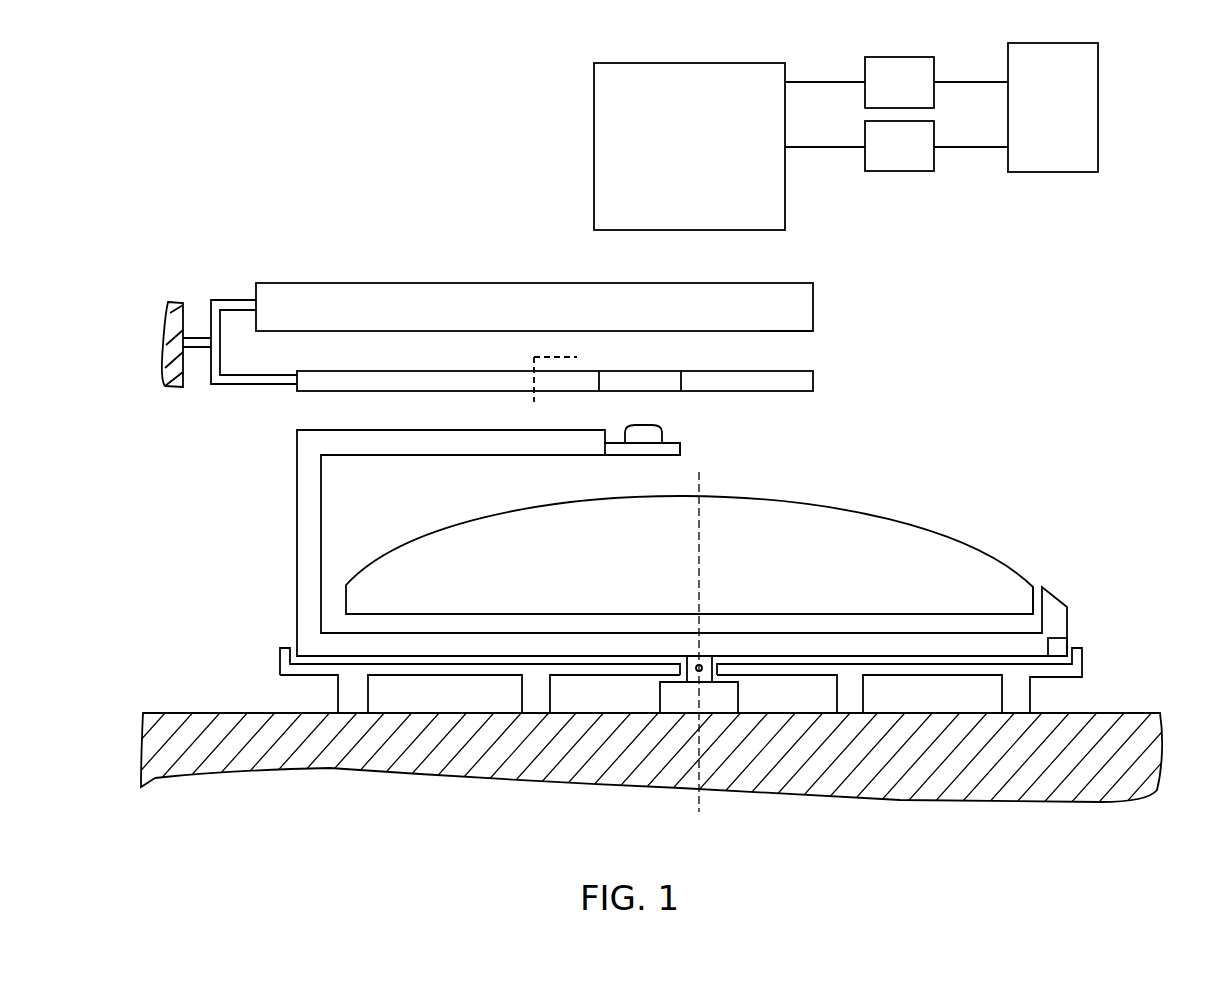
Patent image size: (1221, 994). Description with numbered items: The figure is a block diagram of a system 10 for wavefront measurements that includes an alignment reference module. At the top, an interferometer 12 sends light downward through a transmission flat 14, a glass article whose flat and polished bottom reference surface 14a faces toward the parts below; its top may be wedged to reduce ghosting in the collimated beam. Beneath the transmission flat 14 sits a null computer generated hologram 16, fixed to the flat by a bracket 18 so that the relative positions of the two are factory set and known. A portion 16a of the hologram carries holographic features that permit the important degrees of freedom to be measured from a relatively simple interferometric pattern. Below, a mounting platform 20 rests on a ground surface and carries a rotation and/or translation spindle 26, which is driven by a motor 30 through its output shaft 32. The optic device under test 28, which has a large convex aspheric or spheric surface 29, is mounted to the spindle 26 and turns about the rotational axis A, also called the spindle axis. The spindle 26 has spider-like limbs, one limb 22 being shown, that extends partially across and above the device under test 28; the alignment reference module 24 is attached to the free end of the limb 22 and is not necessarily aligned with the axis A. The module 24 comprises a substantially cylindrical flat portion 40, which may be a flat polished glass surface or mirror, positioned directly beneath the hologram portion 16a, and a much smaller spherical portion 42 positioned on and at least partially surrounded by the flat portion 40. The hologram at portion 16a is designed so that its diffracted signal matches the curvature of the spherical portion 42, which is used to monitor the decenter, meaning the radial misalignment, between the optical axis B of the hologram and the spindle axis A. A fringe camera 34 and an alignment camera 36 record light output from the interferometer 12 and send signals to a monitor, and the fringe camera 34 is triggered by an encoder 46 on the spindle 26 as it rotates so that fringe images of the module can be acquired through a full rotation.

The system for wavefront measurements 10 is at (142, 124).
The interferometer 12 is at (787, 183).
The transmission flat 14 is at (815, 305).
The bottom reference surface 14a is at (779, 326).
The null computer generated hologram 16 is at (815, 379).
The portion of the NCGH 16a is at (638, 382).
The bracket 18 is at (232, 386).
The mounting platform 20 is at (283, 676).
The limb 22 is at (297, 545).
The alignment reference module 24 is at (671, 462).
The rotation and/or translation spindle 26 is at (853, 642).
The optic device under test 28 is at (839, 527).
The convex surface 29 is at (986, 546).
The motor 30 is at (676, 704).
The output shaft 32 is at (704, 672).
The fringe camera 34 is at (935, 92).
The alignment camera 36 is at (935, 157).
The flat portion 40 is at (618, 441).
The spherical portion 42 is at (655, 434).
The encoder 46 is at (1067, 648).
The rotational axis A is at (700, 661).
The NCGH optical axis B is at (565, 374).